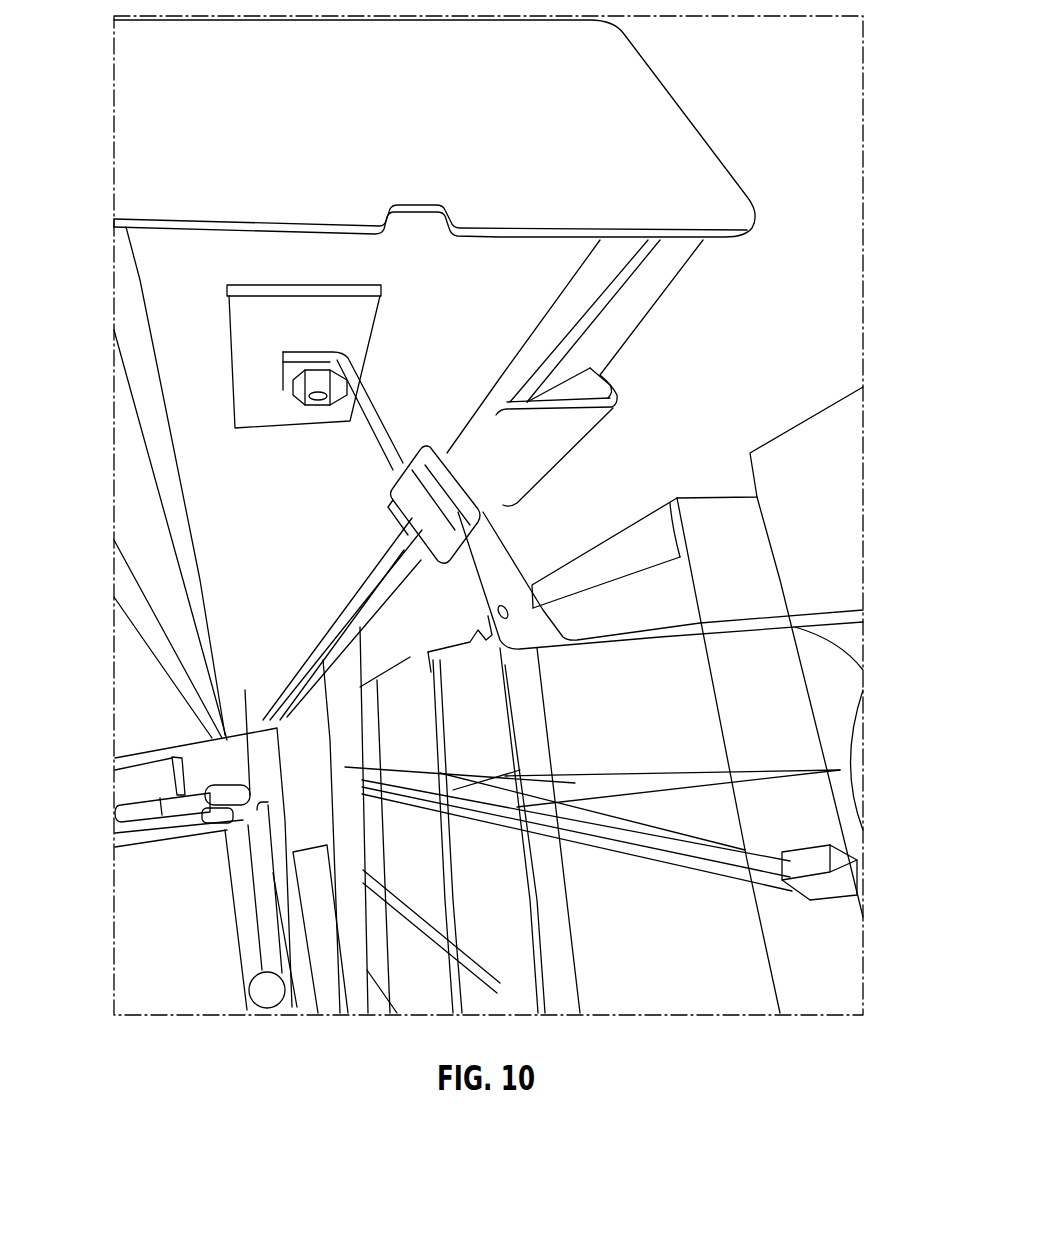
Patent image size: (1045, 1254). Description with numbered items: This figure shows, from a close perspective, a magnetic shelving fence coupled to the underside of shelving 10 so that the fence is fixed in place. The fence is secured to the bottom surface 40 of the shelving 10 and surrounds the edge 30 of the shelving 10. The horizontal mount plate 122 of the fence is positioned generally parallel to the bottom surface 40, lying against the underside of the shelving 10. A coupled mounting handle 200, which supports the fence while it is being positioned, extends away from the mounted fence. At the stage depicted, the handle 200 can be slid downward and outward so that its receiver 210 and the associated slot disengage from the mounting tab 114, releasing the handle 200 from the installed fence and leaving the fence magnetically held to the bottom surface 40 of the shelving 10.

The shelving 10 is at (167, 86).
The edge 30 is at (623, 312).
The bottom surface 40 is at (177, 272).
The mounting tab 114 is at (367, 423).
The horizontal mount plate 122 is at (248, 330).
The mounting handle 200 is at (505, 557).
The receiver 210 is at (350, 598).